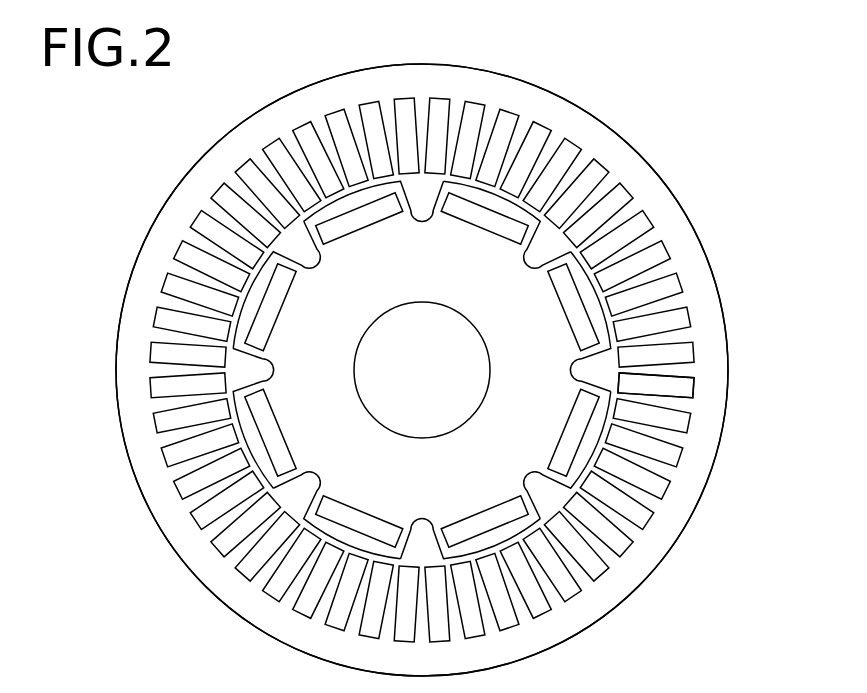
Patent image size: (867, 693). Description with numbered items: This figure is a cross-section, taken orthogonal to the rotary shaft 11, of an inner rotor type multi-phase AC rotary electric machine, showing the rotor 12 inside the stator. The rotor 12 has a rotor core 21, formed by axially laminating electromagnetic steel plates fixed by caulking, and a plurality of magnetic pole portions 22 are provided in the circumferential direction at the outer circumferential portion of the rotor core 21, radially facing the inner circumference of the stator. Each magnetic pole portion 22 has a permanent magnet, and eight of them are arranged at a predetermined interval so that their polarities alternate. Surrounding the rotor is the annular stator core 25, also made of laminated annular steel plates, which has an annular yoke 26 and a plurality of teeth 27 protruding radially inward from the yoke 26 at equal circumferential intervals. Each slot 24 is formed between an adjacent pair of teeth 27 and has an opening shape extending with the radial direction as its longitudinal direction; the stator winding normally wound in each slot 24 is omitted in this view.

The rotary shaft 11 is at (384, 432).
The rotor 12 is at (609, 432).
The rotor core 21 is at (372, 495).
The magnetic pole portion 22 is at (562, 487).
The slot 24 is at (690, 352).
The stator core 25 is at (566, 98).
The yoke 26 is at (617, 158).
The teeth 27 is at (619, 226).